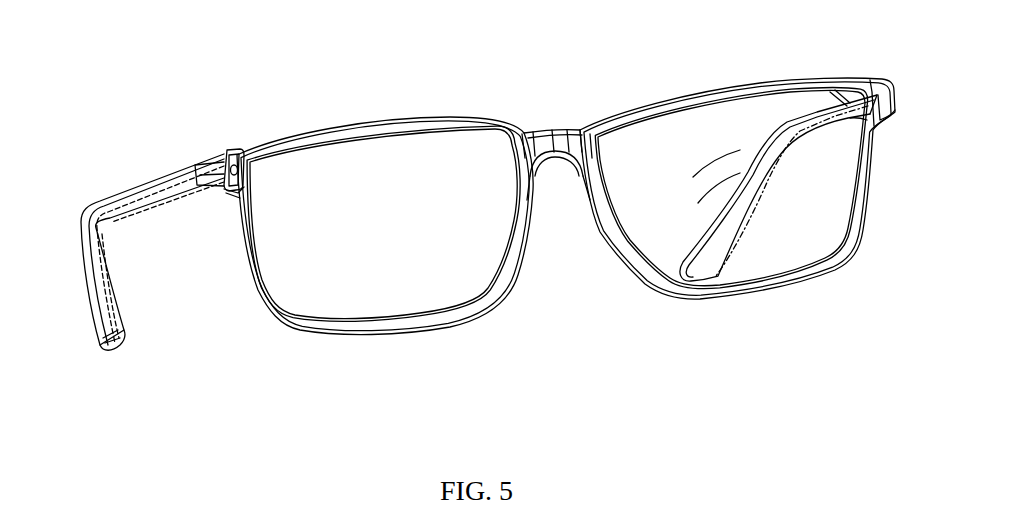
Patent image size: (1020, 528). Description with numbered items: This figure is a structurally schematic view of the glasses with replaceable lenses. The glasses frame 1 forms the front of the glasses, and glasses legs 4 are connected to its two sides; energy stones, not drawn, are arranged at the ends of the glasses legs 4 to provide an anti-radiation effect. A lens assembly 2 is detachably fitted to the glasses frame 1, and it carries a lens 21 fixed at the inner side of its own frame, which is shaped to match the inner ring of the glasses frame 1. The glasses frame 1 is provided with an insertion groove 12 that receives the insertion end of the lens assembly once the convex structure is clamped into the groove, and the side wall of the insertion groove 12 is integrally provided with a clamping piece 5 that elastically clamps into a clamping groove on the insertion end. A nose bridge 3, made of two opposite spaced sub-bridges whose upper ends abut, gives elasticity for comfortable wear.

The glasses frame 1 is at (553, 134).
The lens assembly 2 is at (641, 112).
The lens 21 is at (696, 182).
The nose bridge 3 is at (654, 291).
The glasses legs 4 is at (127, 191).
The clamping piece 5 is at (233, 173).
The insertion groove 12 is at (229, 189).